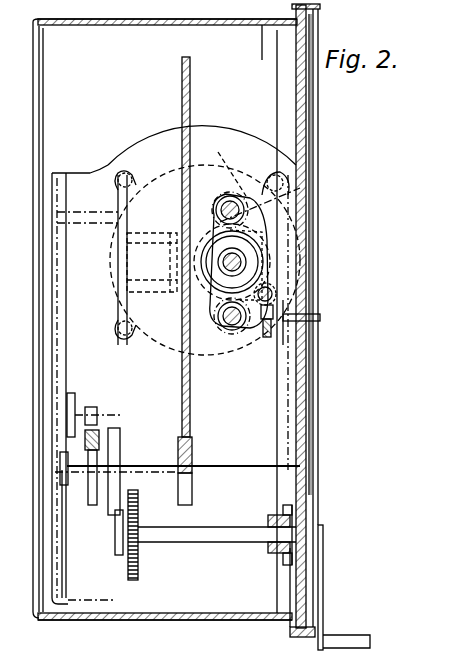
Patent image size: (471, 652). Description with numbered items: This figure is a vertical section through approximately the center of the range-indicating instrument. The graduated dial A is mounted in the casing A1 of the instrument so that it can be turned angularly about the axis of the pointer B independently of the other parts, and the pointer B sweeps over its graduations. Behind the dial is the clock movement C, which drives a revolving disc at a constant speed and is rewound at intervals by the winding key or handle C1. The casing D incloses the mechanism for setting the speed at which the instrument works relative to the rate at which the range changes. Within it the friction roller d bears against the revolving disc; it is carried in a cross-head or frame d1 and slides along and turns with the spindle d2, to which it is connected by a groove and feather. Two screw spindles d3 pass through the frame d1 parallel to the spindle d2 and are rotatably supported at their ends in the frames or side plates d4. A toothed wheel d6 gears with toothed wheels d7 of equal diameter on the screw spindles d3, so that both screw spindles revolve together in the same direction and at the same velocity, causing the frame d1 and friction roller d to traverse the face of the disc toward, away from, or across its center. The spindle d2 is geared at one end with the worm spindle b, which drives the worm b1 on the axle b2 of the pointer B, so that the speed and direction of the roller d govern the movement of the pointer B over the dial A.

The graduated dial A is at (306, 31).
The casing of the instrument A1 is at (218, 20).
The pointer B is at (311, 124).
The clock movement C is at (191, 77).
The winding key or handle C1 is at (341, 640).
The casing D is at (118, 160).
The friction roller d is at (268, 268).
The cross-head or frame d1 is at (262, 218).
The spindle d2 is at (273, 296).
The screw spindles d3 is at (245, 212).
The frames or side plates d4 is at (150, 133).
The toothed wheel d6 is at (296, 243).
The toothed wheels d7 is at (226, 180).
The worm spindle b is at (300, 306).
The worm b1 is at (271, 330).
The axle of the pointer b2 is at (304, 322).